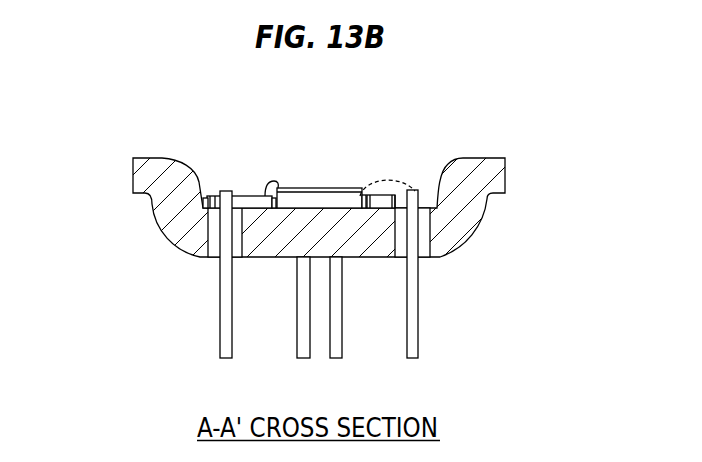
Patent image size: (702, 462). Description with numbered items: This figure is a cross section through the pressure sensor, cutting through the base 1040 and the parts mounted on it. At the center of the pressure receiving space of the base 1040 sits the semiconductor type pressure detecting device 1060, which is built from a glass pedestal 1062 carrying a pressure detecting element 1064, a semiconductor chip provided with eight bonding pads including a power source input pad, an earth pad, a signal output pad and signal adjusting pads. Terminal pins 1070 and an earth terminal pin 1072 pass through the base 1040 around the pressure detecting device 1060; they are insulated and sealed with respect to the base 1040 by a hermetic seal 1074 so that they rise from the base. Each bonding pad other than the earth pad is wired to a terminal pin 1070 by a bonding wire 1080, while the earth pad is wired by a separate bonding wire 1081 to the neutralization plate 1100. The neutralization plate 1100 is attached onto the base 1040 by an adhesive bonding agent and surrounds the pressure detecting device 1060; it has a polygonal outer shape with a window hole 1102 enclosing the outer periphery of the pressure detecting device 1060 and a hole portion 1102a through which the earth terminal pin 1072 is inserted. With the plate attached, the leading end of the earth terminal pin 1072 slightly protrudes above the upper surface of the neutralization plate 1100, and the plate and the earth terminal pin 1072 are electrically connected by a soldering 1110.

The base 1040 is at (467, 212).
The semiconductor type pressure detecting device 1060 is at (340, 185).
The glass pedestal 1062 is at (350, 202).
The pressure detecting element 1064 is at (310, 189).
The terminal pin 1070 is at (413, 350).
The earth terminal pin 1072 is at (230, 345).
The hermetic seal 1074 is at (213, 250).
The bonding wire 1080 is at (397, 181).
The bonding wire 1081 is at (270, 182).
The neutralization plate 1100 is at (255, 194).
The window hole 1102 is at (365, 195).
The hole portion 1102a is at (203, 201).
The soldering 1110 is at (219, 194).